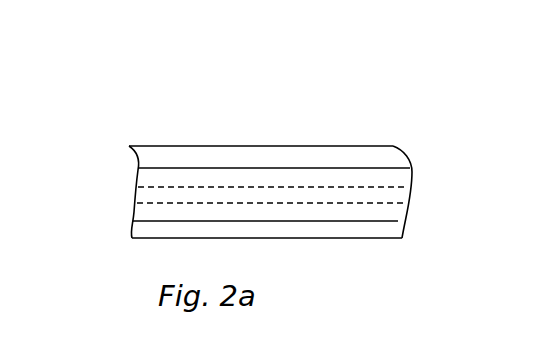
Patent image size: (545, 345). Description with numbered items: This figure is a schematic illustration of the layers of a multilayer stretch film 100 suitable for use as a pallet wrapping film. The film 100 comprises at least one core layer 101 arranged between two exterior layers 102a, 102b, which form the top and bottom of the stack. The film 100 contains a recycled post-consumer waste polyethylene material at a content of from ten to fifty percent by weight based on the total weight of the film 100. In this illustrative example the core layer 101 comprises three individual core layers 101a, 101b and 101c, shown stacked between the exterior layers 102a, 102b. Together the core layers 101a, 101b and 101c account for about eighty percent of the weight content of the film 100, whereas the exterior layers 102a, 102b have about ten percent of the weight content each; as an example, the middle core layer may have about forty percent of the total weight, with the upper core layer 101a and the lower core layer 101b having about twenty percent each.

The multilayer stretch film 100 is at (255, 106).
The core layer 101 is at (108, 168).
The upper core layer 101a is at (405, 178).
The core layer 101b is at (405, 197).
The core layer 101c is at (405, 213).
The exterior layer 102a is at (142, 154).
The exterior layer 102b is at (142, 233).